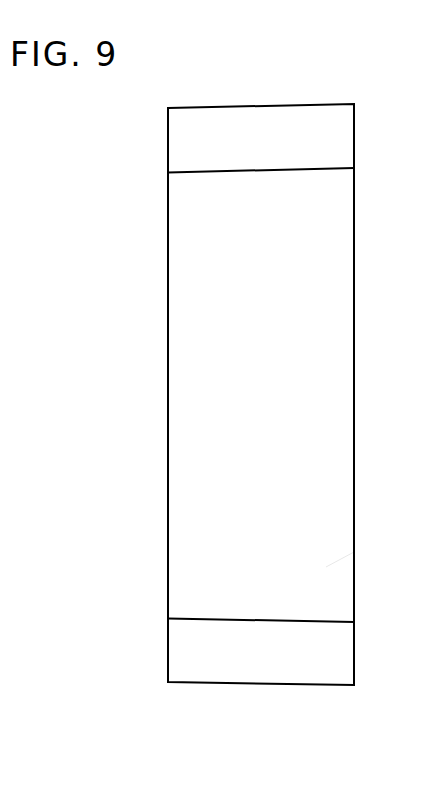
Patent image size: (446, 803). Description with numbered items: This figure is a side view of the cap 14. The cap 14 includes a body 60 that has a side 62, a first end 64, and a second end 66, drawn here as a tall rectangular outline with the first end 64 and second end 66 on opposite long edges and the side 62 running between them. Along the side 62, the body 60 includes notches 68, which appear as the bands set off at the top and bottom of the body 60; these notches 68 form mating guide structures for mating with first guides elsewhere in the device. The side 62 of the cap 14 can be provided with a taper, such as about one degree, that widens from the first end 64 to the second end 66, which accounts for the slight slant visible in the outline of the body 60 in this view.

The cap 14 is at (354, 254).
The body 60 is at (326, 568).
The side 62 is at (290, 435).
The first end 64 is at (168, 280).
The second end 66 is at (354, 346).
The notches 68 is at (272, 146).